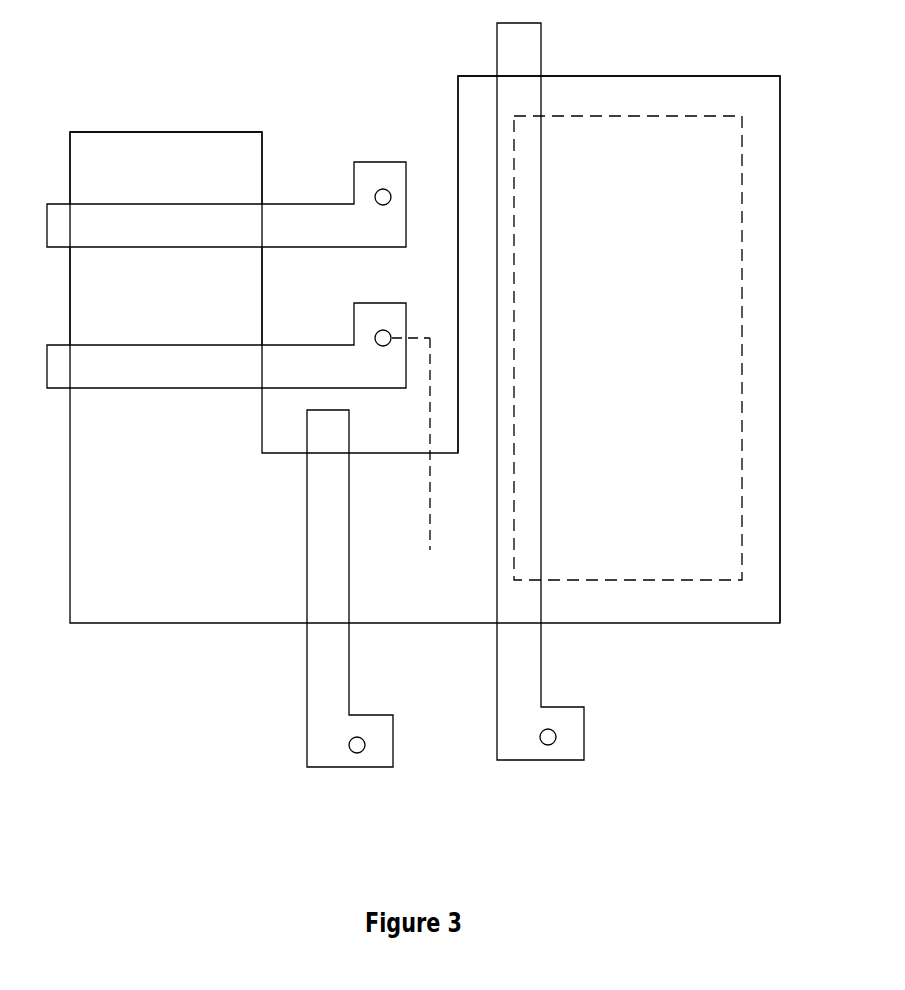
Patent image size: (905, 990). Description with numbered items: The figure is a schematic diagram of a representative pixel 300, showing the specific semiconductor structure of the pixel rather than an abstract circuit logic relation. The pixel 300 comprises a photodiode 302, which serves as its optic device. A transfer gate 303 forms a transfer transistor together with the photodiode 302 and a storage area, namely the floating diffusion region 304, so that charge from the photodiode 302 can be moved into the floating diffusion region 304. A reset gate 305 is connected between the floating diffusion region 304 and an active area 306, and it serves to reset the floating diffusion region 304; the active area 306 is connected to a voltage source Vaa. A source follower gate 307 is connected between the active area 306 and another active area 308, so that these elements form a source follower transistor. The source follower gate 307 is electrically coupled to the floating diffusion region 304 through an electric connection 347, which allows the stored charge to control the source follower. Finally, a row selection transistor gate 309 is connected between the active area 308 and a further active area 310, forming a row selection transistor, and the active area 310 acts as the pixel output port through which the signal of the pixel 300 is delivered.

The pixel 300 is at (419, 824).
The photodiode 302 is at (628, 348).
The transfer gate 303 is at (527, 642).
The floating diffusion region 304 is at (576, 349).
The reset gate 305 is at (331, 649).
The active area 306 is at (425, 349).
The source follower gate 307 is at (153, 373).
The active area 308 is at (166, 296).
The row selection transistor gate 309 is at (165, 238).
The active area 310 is at (166, 168).
The electric connection 347 is at (428, 397).